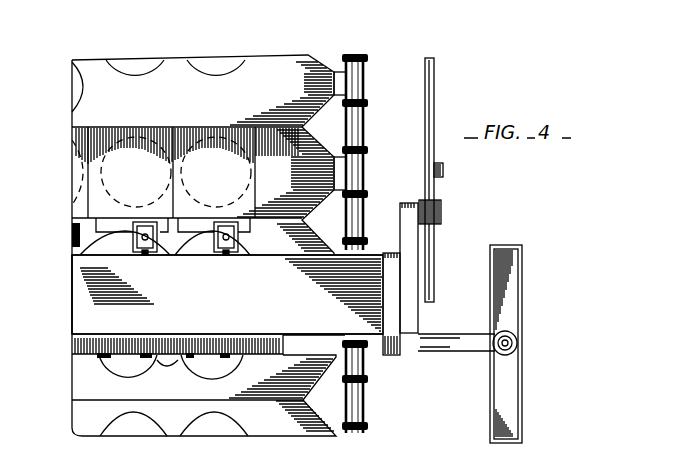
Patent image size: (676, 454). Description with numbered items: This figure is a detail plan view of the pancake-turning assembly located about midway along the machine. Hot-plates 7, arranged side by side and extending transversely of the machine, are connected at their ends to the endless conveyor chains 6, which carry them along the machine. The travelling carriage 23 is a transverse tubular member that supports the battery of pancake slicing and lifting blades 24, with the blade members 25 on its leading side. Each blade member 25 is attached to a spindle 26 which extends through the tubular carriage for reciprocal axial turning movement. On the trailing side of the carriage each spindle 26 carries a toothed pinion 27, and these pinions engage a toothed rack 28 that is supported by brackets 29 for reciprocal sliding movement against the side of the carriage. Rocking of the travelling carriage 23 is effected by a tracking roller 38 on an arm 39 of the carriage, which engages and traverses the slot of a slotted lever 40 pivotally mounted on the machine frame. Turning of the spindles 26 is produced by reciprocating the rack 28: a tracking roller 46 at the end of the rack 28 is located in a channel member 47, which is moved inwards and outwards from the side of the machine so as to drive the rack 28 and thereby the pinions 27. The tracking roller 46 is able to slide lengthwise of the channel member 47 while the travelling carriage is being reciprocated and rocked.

The hot-plate 7 is at (285, 450).
The endless conveyor chain 6 is at (367, 429).
The slotted lever 40 is at (431, 102).
The arm 39 is at (400, 217).
The tracking roller 38 is at (441, 214).
The blade member 25 is at (176, 172).
The spindle 26 is at (223, 355).
The travelling carriage 23 is at (227, 294).
The battery of pancake slicing and lifting blades 24 is at (94, 317).
The bracket 29 is at (108, 355).
The toothed pinion 27 is at (157, 377).
The toothed rack 28 is at (368, 347).
The channel member 47 is at (511, 286).
The tracking roller 46 is at (517, 346).